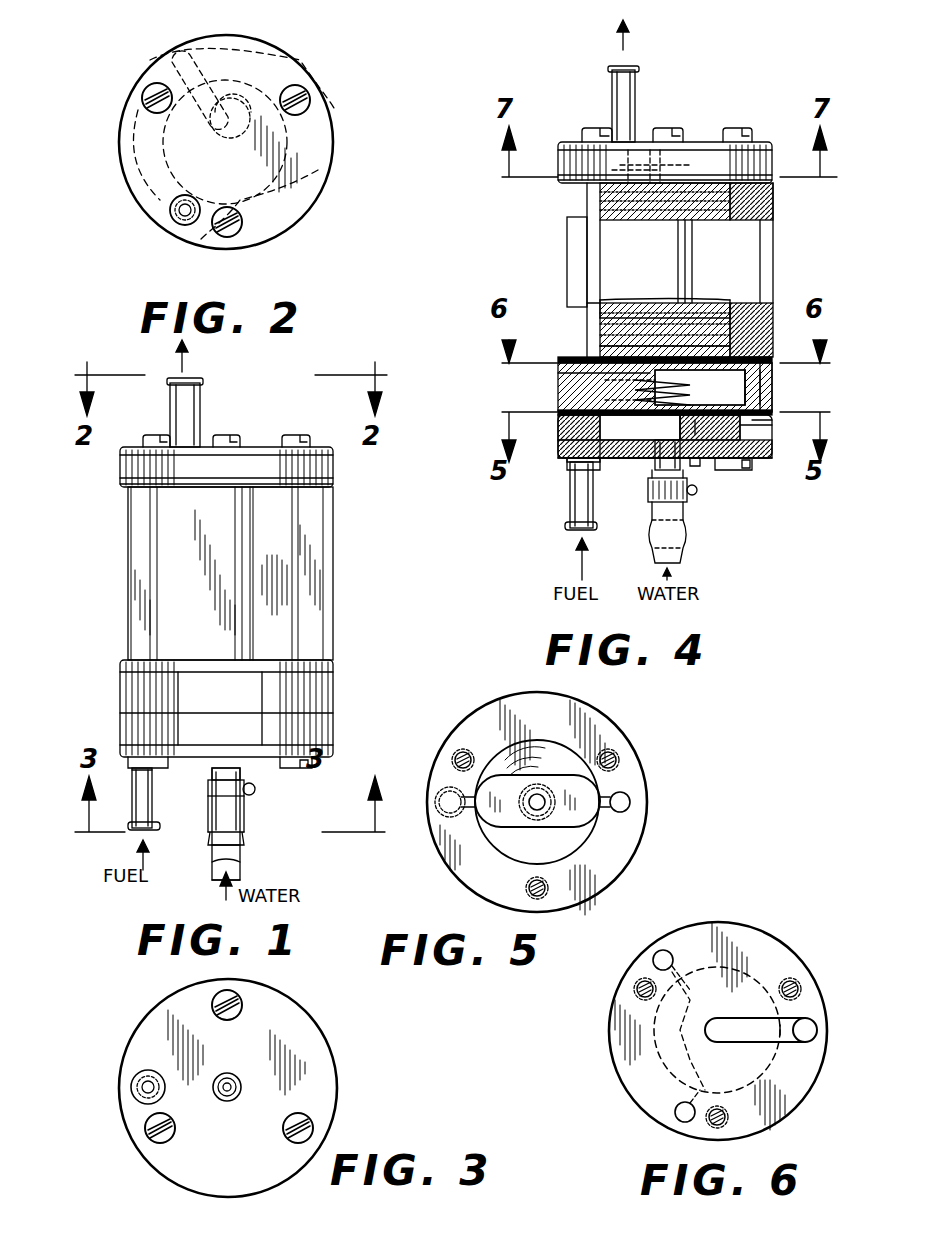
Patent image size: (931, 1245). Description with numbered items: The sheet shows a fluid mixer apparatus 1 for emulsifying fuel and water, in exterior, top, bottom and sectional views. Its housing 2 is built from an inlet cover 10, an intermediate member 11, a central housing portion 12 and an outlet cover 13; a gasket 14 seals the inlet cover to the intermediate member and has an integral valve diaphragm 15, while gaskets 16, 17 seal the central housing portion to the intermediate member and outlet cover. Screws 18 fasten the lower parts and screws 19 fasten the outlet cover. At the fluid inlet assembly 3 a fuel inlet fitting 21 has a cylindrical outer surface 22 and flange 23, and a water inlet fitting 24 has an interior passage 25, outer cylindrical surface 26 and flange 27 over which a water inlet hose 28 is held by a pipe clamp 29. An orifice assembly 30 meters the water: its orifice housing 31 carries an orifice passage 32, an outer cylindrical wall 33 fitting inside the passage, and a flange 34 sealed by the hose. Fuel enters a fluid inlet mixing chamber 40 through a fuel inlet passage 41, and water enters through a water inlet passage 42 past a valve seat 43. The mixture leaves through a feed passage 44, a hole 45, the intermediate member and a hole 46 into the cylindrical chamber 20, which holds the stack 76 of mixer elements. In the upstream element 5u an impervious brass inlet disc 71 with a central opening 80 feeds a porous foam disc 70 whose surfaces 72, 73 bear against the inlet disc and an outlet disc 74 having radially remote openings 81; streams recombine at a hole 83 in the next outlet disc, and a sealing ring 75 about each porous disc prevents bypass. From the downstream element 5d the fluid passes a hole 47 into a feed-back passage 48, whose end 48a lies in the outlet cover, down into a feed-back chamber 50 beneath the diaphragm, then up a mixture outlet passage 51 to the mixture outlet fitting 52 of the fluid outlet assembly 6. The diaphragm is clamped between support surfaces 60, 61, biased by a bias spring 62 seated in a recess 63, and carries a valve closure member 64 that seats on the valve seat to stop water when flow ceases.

In FIG. 1, the fluid mixer apparatus 1 is at (268, 388).
In FIG. 1, the housing 2 is at (340, 588).
In FIG. 1, the fluid inlet assembly 3 is at (206, 872).
In FIG. 4, the fluid inlet assembly 3 is at (562, 538).
In FIG. 3, the fluid inlet assembly 3 is at (135, 1018).
In FIG. 4, the fluid mixer element (most downstream) 5d is at (745, 200).
In FIG. 4, the fluid mixer element (most upstream) 5u is at (740, 325).
In FIG. 2, the fluid outlet assembly 6 is at (150, 222).
In FIG. 1, the fluid outlet assembly 6 is at (203, 392).
In FIG. 4, the fluid outlet assembly 6 is at (596, 75).
In FIG. 1, the inlet cover 10 is at (333, 735).
In FIG. 4, the inlet cover 10 is at (750, 460).
In FIG. 5, the inlet cover 10 is at (625, 735).
In FIG. 3, the inlet cover 10 is at (308, 1012).
In FIG. 1, the intermediate member 11 is at (333, 690).
In FIG. 4, the intermediate member 11 is at (773, 402).
In FIG. 6, the intermediate member 11 is at (788, 945).
In FIG. 1, the central housing portion 12 is at (333, 520).
In FIG. 4, the central housing portion 12 is at (567, 262).
In FIG. 2, the outlet cover 13 is at (333, 122).
In FIG. 1, the outlet cover 13 is at (333, 465).
In FIG. 4, the outlet cover 13 is at (758, 142).
In FIG. 1, the gasket 14 is at (333, 713).
In FIG. 4, the gasket 14 is at (773, 426).
In FIG. 4, the valve diaphragm 15 is at (722, 462).
In FIG. 1, the gasket 16 is at (333, 661).
In FIG. 4, the gasket 16 is at (772, 360).
In FIG. 1, the gasket 17 is at (333, 485).
In FIG. 4, the gasket 17 is at (772, 162).
In FIG. 1, the screws 18 is at (308, 768).
In FIG. 4, the screws 18 is at (750, 470).
In FIG. 5, the screws 18 is at (618, 758).
In FIG. 6, the screws 18 is at (636, 984).
In FIG. 3, the screws 18 is at (313, 1125).
In FIG. 2, the screws 19 is at (305, 92).
In FIG. 1, the screws 19 is at (219, 435).
In FIG. 4, the screws 19 is at (668, 140).
In FIG. 4, the cylindrical chamber 20 is at (600, 225).
In FIG. 1, the fuel inlet fitting 21 is at (136, 805).
In FIG. 4, the fuel inlet fitting 21 is at (570, 496).
In FIG. 3, the fuel inlet fitting 21 is at (146, 1080).
In FIG. 1, the cylindrical outer surface 22 is at (132, 792).
In FIG. 3, the cylindrical outer surface 22 is at (131, 1082).
In FIG. 1, the flange 23 is at (130, 830).
In FIG. 4, the flange 23 is at (565, 526).
In FIG. 3, the flange 23 is at (137, 1097).
In FIG. 1, the water inlet fitting 24 is at (212, 773).
In FIG. 4, the water inlet fitting 24 is at (655, 460).
In FIG. 1, the interior passage 25 is at (220, 775).
In FIG. 1, the outer cylindrical surface 26 is at (245, 768).
In FIG. 1, the flange 27 is at (208, 838).
In FIG. 1, the water inlet hose 28 is at (240, 872).
In FIG. 4, the water inlet hose 28 is at (683, 556).
In FIG. 1, the pipe clamp 29 is at (255, 788).
In FIG. 4, the pipe clamp 29 is at (692, 495).
In FIG. 1, the orifice assembly 30 is at (210, 846).
In FIG. 4, the orifice assembly 30 is at (692, 530).
In FIG. 3, the orifice assembly 30 is at (235, 1104).
In FIG. 1, the orifice housing 31 is at (244, 820).
In FIG. 3, the orifice housing 31 is at (236, 1076).
In FIG. 1, the orifice passage 32 is at (244, 804).
In FIG. 3, the orifice passage 32 is at (224, 1073).
In FIG. 1, the outer cylindrical wall 33 is at (208, 820).
In FIG. 1, the flange 34 is at (242, 842).
In FIG. 4, the fluid inlet mixing chamber 40 is at (618, 455).
In FIG. 5, the fluid inlet mixing chamber 40 is at (497, 805).
In FIG. 4, the fuel inlet passage 41 is at (572, 464).
In FIG. 5, the fuel inlet passage 41 is at (440, 826).
In FIG. 4, the water inlet passage 42 is at (688, 490).
In FIG. 4, the valve seat 43 is at (655, 434).
In FIG. 4, the feed passage 44 is at (773, 387).
In FIG. 5, the feed passage 44 is at (628, 808).
In FIG. 6, the feed passage 44 is at (761, 1030).
In FIG. 4, the hole 45 is at (770, 440).
In FIG. 4, the hole 46 is at (660, 372).
In FIG. 4, the hole 47 is at (655, 165).
In FIG. 2, the feed-back passage 48 is at (230, 114).
In FIG. 4, the feed-back passage 48 is at (640, 175).
In FIG. 6, the feed-back passage 48 is at (660, 950).
In FIG. 2, the end of feed-back passage 48a is at (180, 42).
In FIG. 4, the feed-back chamber 50 is at (560, 388).
In FIG. 6, the feed-back chamber 50 is at (654, 1015).
In FIG. 6, the mixture outlet passage 51 is at (676, 1120).
In FIG. 2, the mixture outlet fitting 52 is at (185, 225).
In FIG. 1, the mixture outlet fitting 52 is at (170, 394).
In FIG. 4, the mixture outlet fitting 52 is at (636, 84).
In FIG. 4, the support surface 60 is at (566, 430).
In FIG. 5, the support surface 60 is at (488, 848).
In FIG. 4, the support surface 61 is at (558, 406).
In FIG. 4, the bias spring 62 is at (558, 374).
In FIG. 4, the recess 63 is at (700, 388).
In FIG. 4, the valve closure member 64 is at (682, 426).
In FIG. 4, the porous disc 70 is at (600, 330).
In FIG. 4, the inlet disc 71 is at (600, 346).
In FIG. 4, the surface 72 is at (762, 372).
In FIG. 4, the surface 73 is at (688, 300).
In FIG. 4, the outlet disc 74 is at (598, 308).
In FIG. 4, the sealing ring 75 is at (750, 312).
In FIG. 4, the stack 76 is at (748, 214).
In FIG. 4, the opening 80 is at (628, 302).
In FIG. 4, the openings 81 is at (705, 303).
In FIG. 4, the hole 83 is at (670, 300).